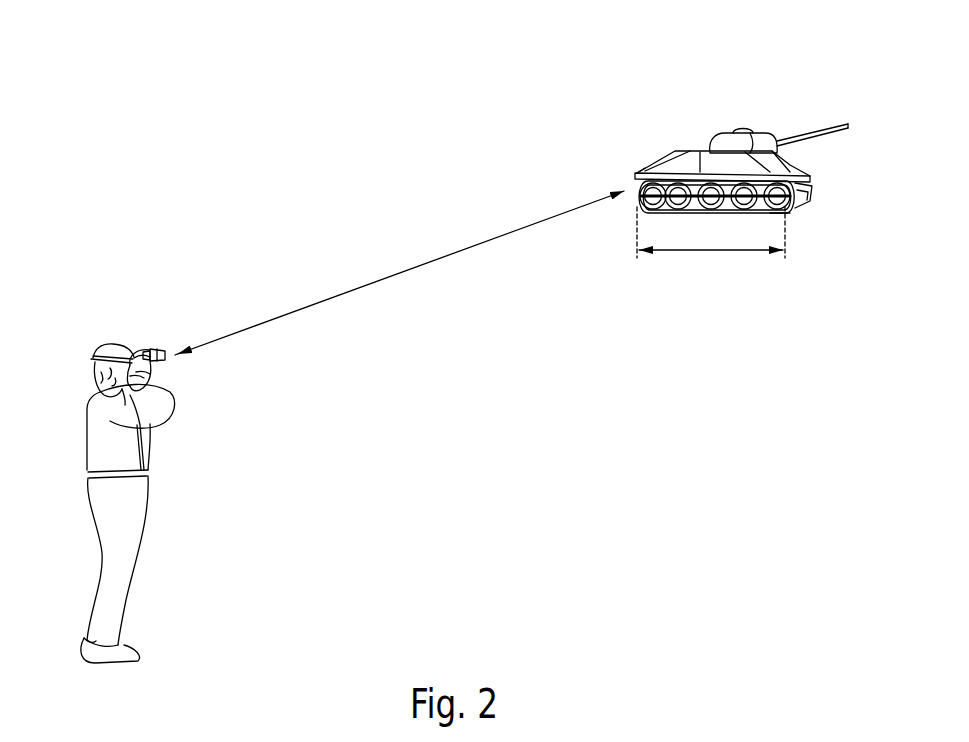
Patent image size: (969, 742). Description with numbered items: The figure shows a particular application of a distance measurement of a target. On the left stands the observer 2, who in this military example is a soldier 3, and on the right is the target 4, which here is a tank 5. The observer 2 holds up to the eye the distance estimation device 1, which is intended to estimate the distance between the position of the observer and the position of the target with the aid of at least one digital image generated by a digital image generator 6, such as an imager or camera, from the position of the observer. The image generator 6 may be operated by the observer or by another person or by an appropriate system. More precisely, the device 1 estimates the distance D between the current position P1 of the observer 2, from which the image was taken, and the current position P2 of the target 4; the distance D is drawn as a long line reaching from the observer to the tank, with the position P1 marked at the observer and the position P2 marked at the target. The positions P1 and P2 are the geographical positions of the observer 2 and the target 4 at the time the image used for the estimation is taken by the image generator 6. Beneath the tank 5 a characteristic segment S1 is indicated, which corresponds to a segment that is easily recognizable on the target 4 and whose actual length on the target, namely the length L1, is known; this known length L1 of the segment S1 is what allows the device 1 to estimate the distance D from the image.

The distance estimation device 1 is at (160, 331).
The observer 2 is at (80, 341).
The soldier 3 is at (86, 431).
The target 4 is at (741, 135).
The tank 5 is at (758, 132).
The digital image generator 6 is at (153, 349).
The current position of the observer P1 is at (186, 327).
The current position of the target P2 is at (643, 162).
The distance D is at (388, 277).
The length of the characteristic segment L1 is at (710, 255).
The characteristic segment S1 is at (787, 218).